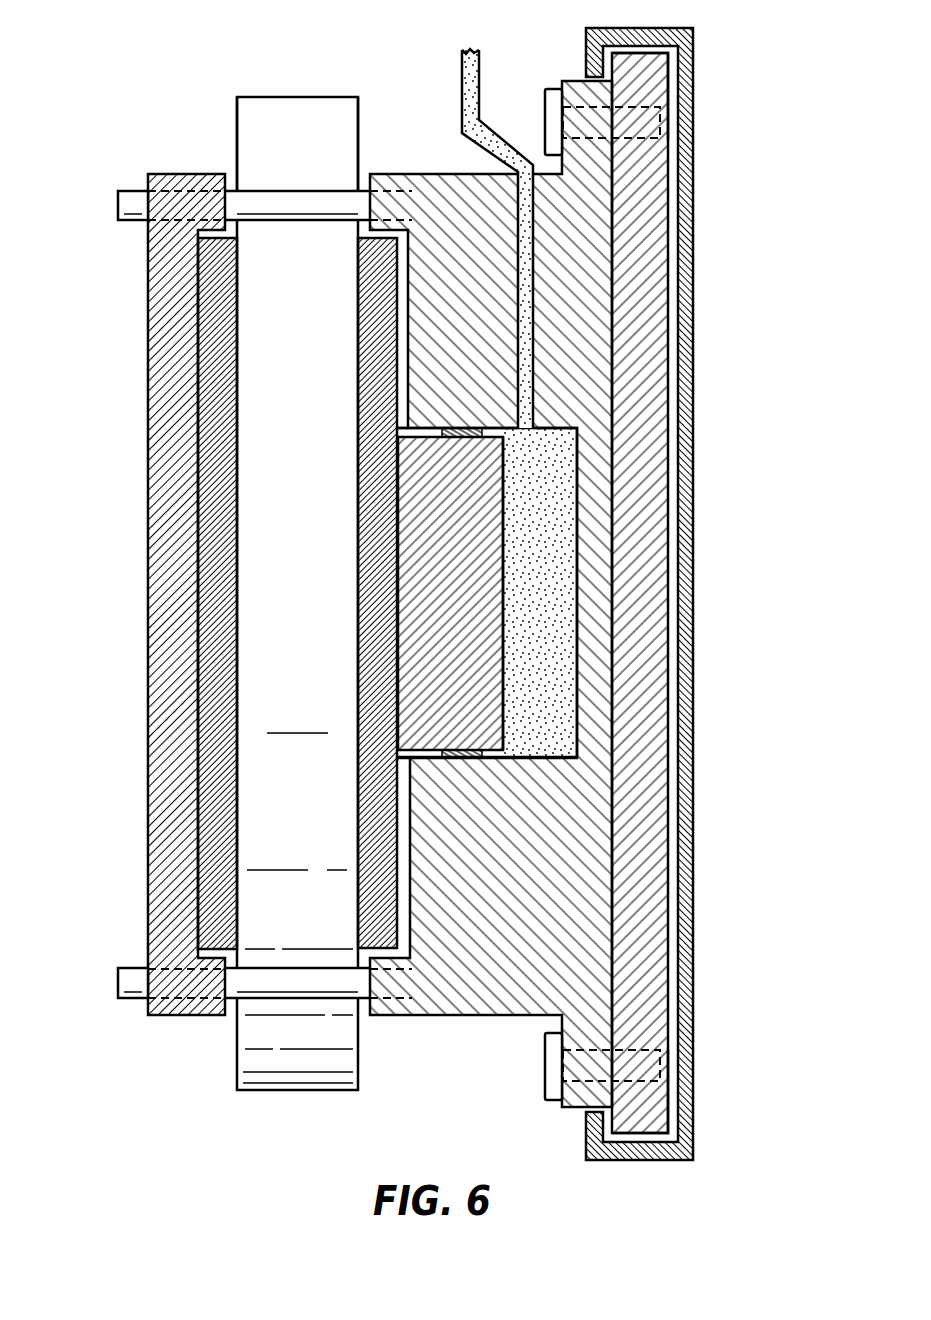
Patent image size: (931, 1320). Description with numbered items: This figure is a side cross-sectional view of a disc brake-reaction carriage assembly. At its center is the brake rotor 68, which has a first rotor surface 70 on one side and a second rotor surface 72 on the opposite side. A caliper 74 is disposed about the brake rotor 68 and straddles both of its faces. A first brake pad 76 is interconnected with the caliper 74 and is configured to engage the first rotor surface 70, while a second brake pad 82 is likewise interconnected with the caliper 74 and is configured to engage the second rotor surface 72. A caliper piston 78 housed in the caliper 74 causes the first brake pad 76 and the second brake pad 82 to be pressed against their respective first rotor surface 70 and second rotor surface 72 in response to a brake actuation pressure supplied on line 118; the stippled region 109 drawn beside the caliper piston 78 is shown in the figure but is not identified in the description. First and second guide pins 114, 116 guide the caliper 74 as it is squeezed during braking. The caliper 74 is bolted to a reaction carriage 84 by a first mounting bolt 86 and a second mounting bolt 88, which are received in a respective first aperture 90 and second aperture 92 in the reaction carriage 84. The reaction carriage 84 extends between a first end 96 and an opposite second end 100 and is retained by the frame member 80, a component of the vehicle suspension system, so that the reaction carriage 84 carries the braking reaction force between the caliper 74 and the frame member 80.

The brake rotor 68 is at (300, 112).
The first rotor surface 70 is at (235, 118).
The second rotor surface 72 is at (360, 118).
The caliper 74 is at (142, 502).
The first brake pad 76 is at (218, 343).
The caliper piston 78 is at (433, 667).
The frame member 80 is at (695, 329).
The second brake pad 82 is at (382, 255).
The reaction carriage 84 is at (640, 620).
The first mounting bolt 86 is at (543, 1068).
The second mounting bolt 88 is at (543, 108).
The first aperture 90 is at (662, 1054).
The second aperture 92 is at (668, 108).
The first end 96 is at (652, 1107).
The second end 100 is at (640, 80).
The filler material 109 is at (558, 565).
The first guide pin 114 is at (125, 982).
The second guide pin 116 is at (122, 203).
The line 118 is at (467, 78).